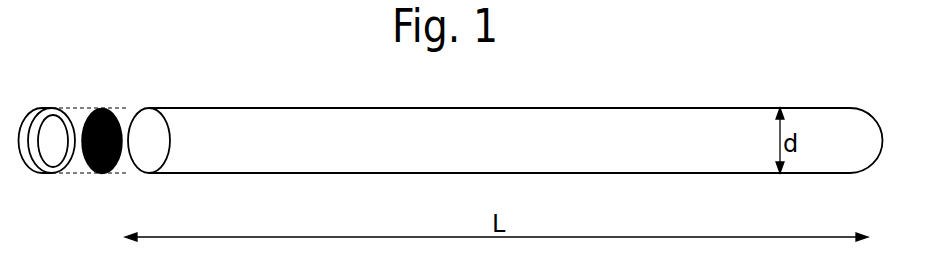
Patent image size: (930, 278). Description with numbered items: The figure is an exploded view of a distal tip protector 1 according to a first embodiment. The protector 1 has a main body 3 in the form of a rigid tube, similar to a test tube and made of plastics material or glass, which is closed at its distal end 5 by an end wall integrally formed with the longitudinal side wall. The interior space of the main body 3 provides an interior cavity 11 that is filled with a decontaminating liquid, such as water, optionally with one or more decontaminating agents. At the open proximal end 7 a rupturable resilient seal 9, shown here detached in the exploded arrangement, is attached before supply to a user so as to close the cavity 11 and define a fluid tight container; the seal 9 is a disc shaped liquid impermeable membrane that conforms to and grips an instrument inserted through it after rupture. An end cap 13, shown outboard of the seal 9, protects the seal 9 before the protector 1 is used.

The distal tip protector 1 is at (523, 128).
The main body 3 is at (587, 175).
The distal end 5 is at (866, 173).
The proximal end 7 is at (133, 108).
The rupturable resilient seal 9 is at (92, 108).
The interior cavity 11 is at (285, 147).
The end cap 13 is at (45, 173).